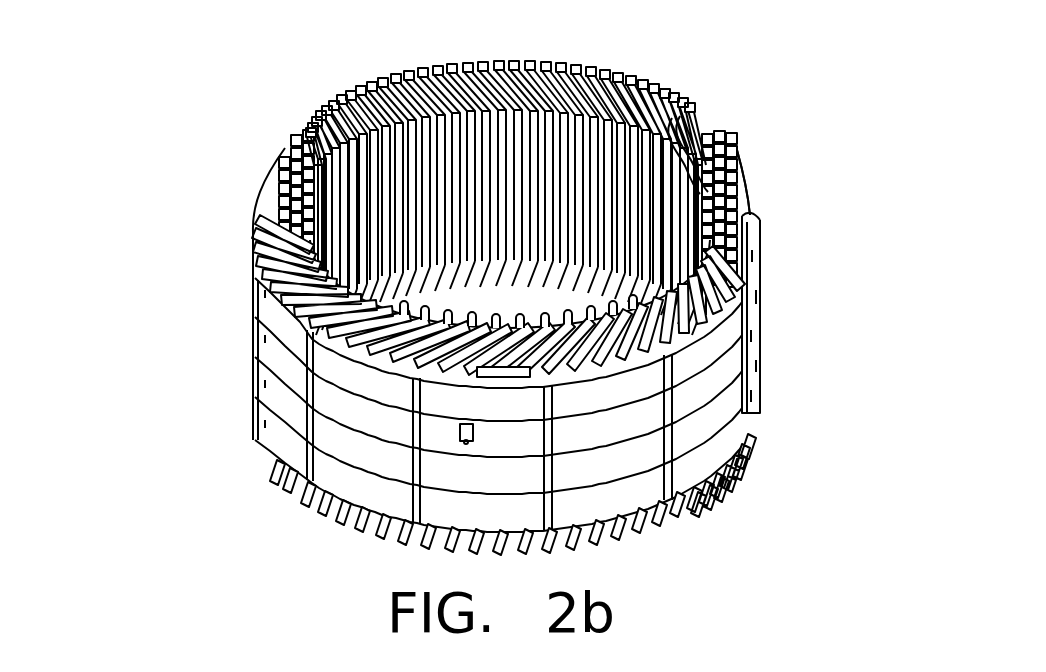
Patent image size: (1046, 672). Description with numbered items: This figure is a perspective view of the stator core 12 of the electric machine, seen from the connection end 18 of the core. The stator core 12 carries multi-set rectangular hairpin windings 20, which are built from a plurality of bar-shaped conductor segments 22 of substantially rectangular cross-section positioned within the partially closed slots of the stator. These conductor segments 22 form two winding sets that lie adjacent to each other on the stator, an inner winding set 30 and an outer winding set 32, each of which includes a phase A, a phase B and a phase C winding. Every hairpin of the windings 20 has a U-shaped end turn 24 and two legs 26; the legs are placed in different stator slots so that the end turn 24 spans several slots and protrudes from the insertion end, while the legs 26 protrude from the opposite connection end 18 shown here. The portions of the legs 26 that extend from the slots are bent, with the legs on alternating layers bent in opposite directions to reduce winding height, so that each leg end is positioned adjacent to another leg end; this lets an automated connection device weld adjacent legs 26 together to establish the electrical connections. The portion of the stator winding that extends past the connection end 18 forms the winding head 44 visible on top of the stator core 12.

The stator core 12 is at (693, 423).
The connection end 18 is at (735, 200).
The hairpin windings 20 is at (714, 157).
The conductor segments 22 is at (673, 133).
The U-shaped end turn 24 is at (445, 528).
The legs 26 is at (625, 75).
The inner winding set 30 is at (372, 85).
The outer winding set 32 is at (293, 273).
The winding head 44 is at (265, 245).